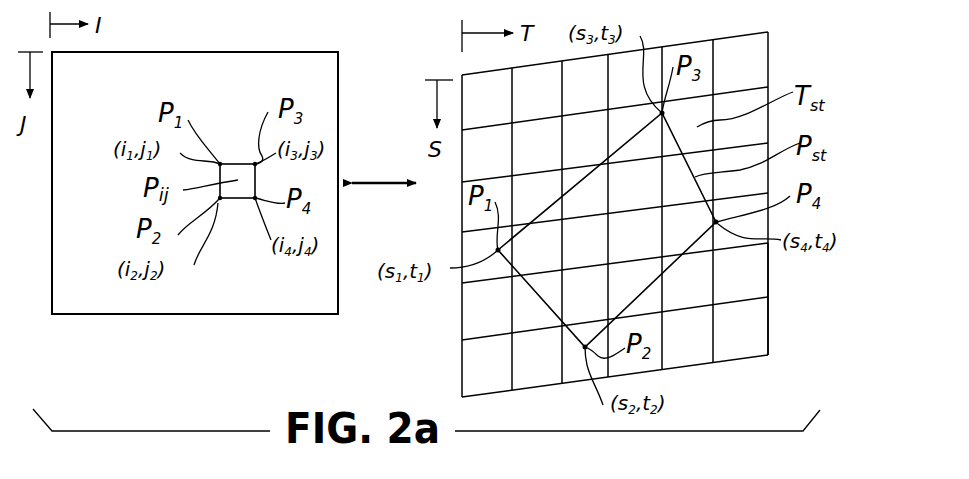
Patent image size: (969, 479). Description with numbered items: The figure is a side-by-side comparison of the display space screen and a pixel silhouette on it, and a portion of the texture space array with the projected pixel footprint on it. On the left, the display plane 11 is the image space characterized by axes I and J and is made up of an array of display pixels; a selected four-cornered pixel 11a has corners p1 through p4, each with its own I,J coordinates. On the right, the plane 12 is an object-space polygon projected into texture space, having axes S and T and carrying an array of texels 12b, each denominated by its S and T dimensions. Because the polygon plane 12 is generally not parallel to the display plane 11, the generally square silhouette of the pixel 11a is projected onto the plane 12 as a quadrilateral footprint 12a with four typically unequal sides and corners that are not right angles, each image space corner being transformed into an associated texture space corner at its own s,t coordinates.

The display plane 11 is at (148, 52).
The pixel 11a is at (237, 164).
The plane 12 is at (768, 50).
The footprint 12a is at (572, 188).
The texels 12b is at (755, 277).